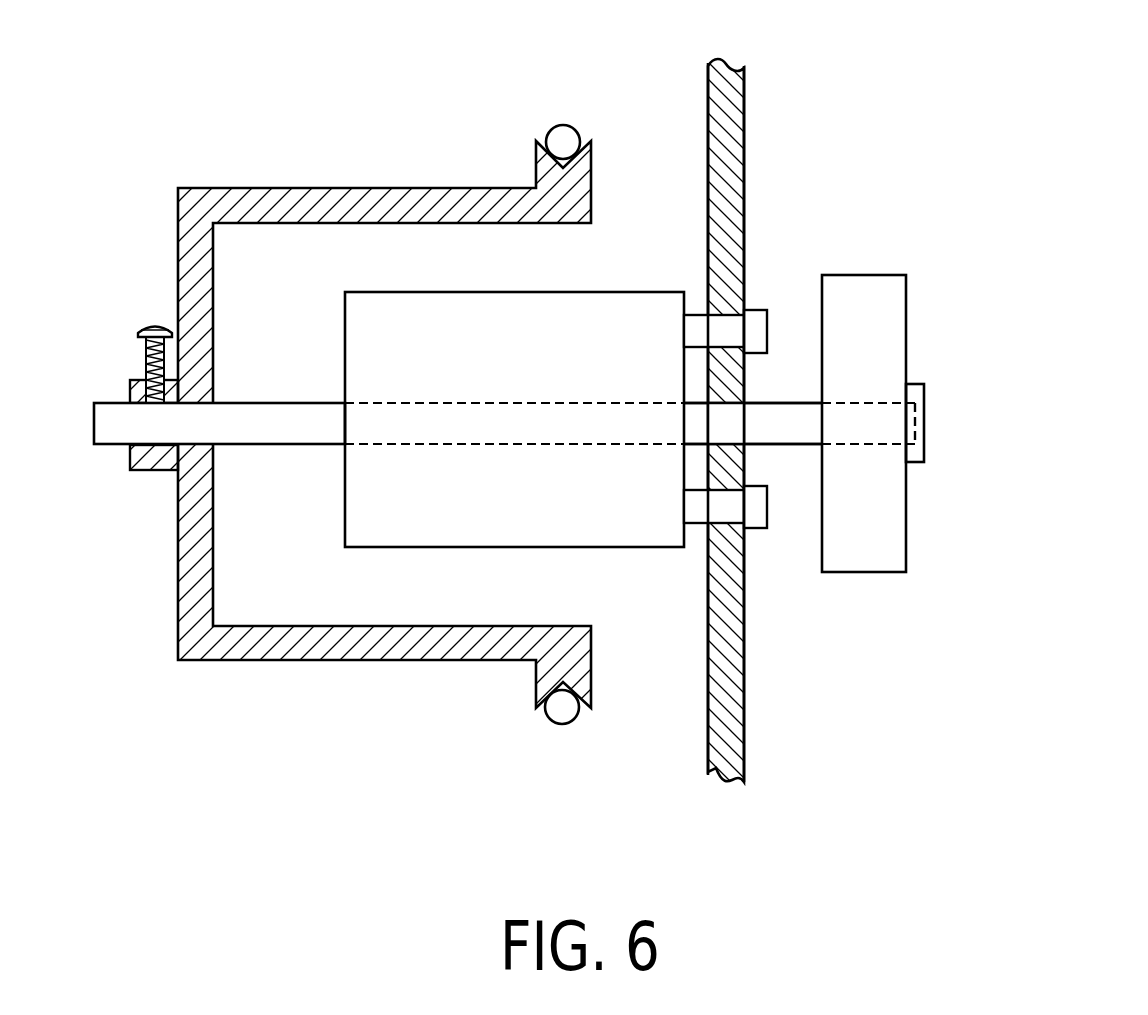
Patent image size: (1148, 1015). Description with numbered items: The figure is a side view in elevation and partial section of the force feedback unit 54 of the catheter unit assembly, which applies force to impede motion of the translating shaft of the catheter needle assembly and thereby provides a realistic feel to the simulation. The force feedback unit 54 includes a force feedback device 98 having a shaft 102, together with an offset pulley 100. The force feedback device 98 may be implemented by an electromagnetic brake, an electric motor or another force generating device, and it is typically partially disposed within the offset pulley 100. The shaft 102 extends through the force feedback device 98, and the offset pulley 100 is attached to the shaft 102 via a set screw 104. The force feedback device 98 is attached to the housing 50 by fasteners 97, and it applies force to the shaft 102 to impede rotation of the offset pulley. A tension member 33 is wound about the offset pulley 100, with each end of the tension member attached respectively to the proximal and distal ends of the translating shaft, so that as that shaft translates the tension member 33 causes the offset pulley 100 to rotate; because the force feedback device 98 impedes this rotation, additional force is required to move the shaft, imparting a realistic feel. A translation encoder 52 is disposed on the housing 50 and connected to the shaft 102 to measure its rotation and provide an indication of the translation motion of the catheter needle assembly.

The force feedback unit 54 is at (393, 47).
The tension member 33 is at (560, 125).
The housing 50 is at (744, 140).
The fasteners 97 is at (768, 310).
The translation encoder 52 is at (907, 333).
The set screw 104 is at (152, 324).
The shaft 102 is at (233, 447).
The force feedback device 98 is at (370, 553).
The offset pulley 100 is at (535, 685).